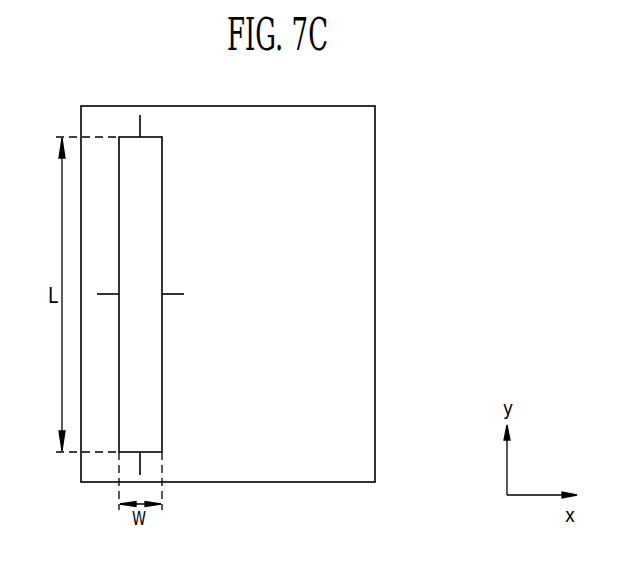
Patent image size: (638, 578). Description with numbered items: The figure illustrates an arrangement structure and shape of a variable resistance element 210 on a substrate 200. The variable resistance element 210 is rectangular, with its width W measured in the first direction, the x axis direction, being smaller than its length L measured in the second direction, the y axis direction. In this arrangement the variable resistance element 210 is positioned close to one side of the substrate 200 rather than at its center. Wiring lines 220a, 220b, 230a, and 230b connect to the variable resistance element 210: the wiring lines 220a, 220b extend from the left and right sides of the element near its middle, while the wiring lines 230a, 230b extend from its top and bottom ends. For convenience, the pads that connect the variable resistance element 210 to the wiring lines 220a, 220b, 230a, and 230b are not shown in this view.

The substrate 200 is at (375, 313).
The variable resistance element 210 is at (162, 227).
The wiring line 220a is at (102, 294).
The wiring line 220b is at (173, 294).
The wiring line 230a is at (140, 123).
The wiring line 230b is at (140, 462).